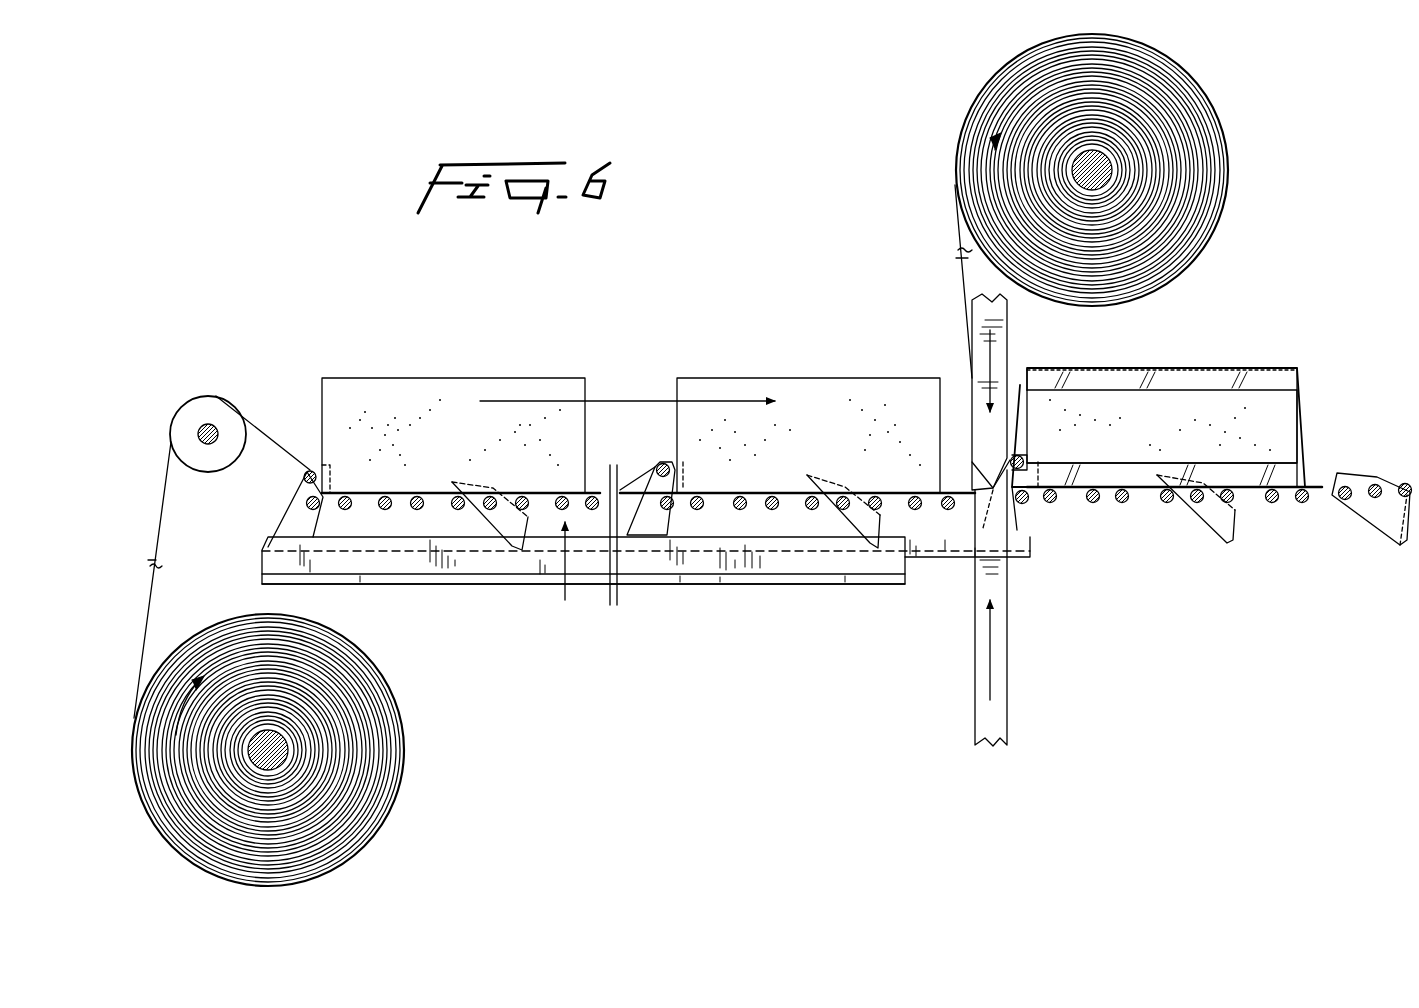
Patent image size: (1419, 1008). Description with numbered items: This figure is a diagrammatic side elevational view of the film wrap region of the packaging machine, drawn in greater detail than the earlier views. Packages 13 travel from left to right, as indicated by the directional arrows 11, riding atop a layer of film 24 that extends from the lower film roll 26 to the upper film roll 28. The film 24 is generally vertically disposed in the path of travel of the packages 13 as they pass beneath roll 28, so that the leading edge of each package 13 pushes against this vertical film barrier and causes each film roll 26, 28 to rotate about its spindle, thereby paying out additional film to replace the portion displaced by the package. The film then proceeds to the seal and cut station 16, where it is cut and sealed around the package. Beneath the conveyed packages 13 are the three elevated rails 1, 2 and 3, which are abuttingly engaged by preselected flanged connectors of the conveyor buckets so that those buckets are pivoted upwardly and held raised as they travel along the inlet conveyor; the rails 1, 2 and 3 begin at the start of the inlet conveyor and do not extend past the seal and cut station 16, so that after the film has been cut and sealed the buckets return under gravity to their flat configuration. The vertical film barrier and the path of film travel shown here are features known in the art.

The rail 1 is at (420, 567).
The rail 2 is at (545, 572).
The rail 3 is at (795, 575).
The directional arrows 11 is at (620, 400).
The packages 13 is at (436, 385).
The seal and cut station 16 is at (955, 365).
The layer of film 24 is at (148, 605).
The film roll 26 is at (390, 740).
The film roll 28 is at (1183, 95).